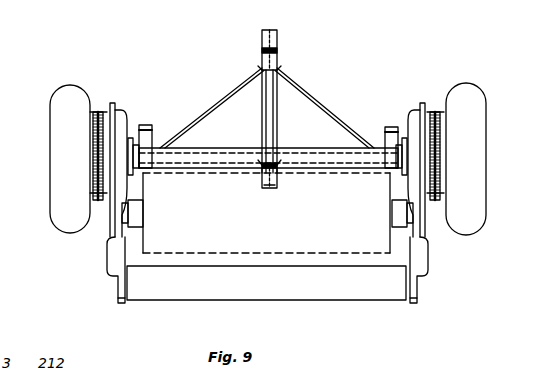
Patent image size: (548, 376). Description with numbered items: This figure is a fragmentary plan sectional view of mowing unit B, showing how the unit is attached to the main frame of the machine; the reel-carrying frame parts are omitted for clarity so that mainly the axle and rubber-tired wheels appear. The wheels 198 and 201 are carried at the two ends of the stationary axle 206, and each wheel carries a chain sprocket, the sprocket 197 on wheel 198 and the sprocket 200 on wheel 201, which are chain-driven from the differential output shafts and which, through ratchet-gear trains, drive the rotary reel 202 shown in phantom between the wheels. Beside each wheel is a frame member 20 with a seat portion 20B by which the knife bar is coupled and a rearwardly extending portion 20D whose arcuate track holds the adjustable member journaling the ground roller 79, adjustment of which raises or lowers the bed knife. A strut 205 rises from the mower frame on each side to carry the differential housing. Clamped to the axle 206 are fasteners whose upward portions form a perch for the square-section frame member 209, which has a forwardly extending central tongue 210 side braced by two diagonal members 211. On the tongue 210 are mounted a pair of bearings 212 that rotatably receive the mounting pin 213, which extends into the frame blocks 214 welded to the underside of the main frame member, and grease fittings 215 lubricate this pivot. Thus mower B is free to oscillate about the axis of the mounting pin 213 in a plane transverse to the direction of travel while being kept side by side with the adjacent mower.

The wheel 201 is at (68, 88).
The wheel 198 is at (462, 86).
The sprocket 200 is at (97, 143).
The sprocket 197 is at (441, 117).
The frame member 20 is at (120, 115).
The seat portion of frame member 20B is at (107, 264).
The rearwardly extending portion of frame member 20D is at (120, 304).
The strut 205 is at (147, 125).
The axle 206 is at (212, 170).
The frame member of square section 209 is at (348, 170).
The tongue 210 is at (278, 121).
The mounting pin 213 is at (262, 123).
The frame blocks 214 is at (261, 46).
The bearings 212 is at (261, 59).
The diagonal members 211 is at (222, 102).
The grease fittings 215 is at (281, 64).
The rotary reel 202 is at (280, 253).
The ground roller 79 is at (362, 298).
The mowing unit B is at (204, 281).